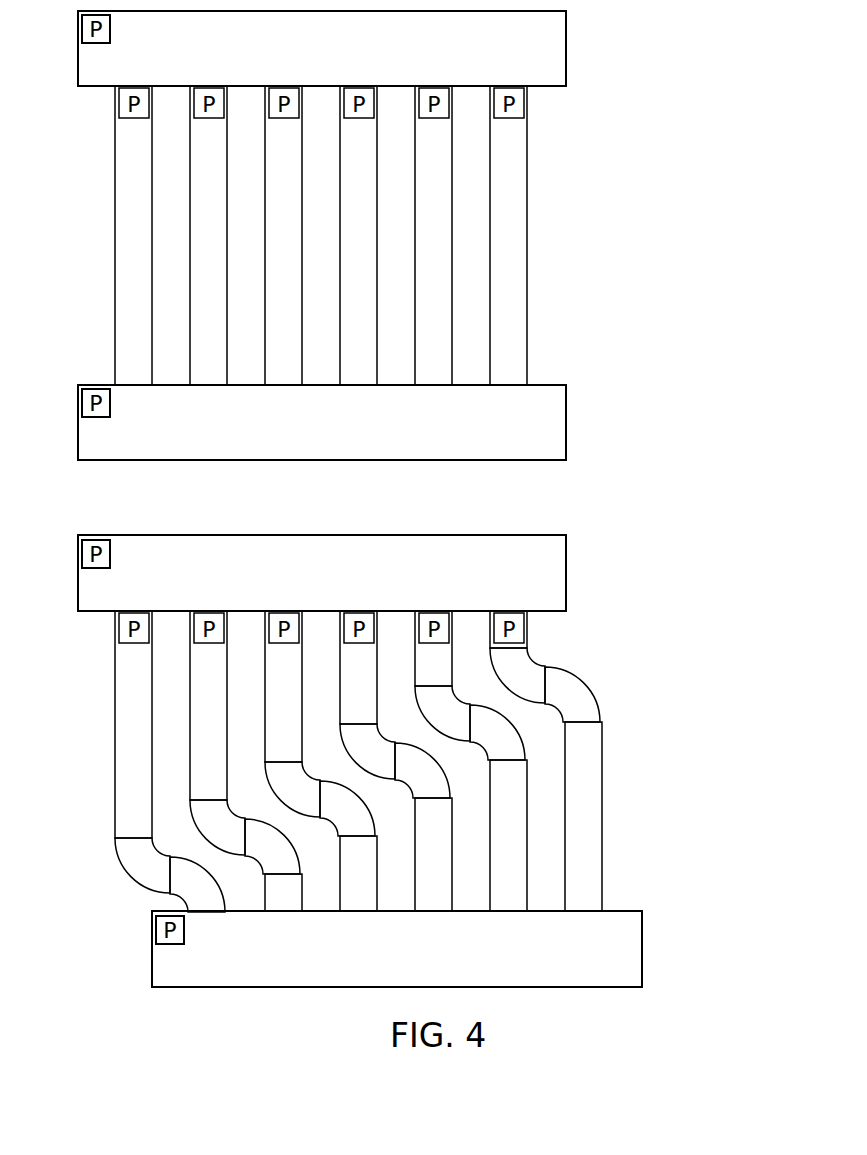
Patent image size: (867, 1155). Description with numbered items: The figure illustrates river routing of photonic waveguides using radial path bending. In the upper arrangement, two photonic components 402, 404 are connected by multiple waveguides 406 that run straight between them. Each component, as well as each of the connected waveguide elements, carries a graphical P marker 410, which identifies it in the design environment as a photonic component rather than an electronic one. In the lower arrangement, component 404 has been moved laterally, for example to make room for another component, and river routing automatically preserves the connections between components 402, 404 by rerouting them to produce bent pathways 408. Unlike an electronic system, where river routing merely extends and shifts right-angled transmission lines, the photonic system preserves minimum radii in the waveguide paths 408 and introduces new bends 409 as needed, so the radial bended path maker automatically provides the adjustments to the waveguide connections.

The component 402 is at (567, 50).
The component 404 is at (567, 425).
The waveguides 406 is at (529, 217).
The bent pathways 408 is at (603, 799).
The bends 409 is at (602, 686).
The graphical P marker 410 is at (530, 107).